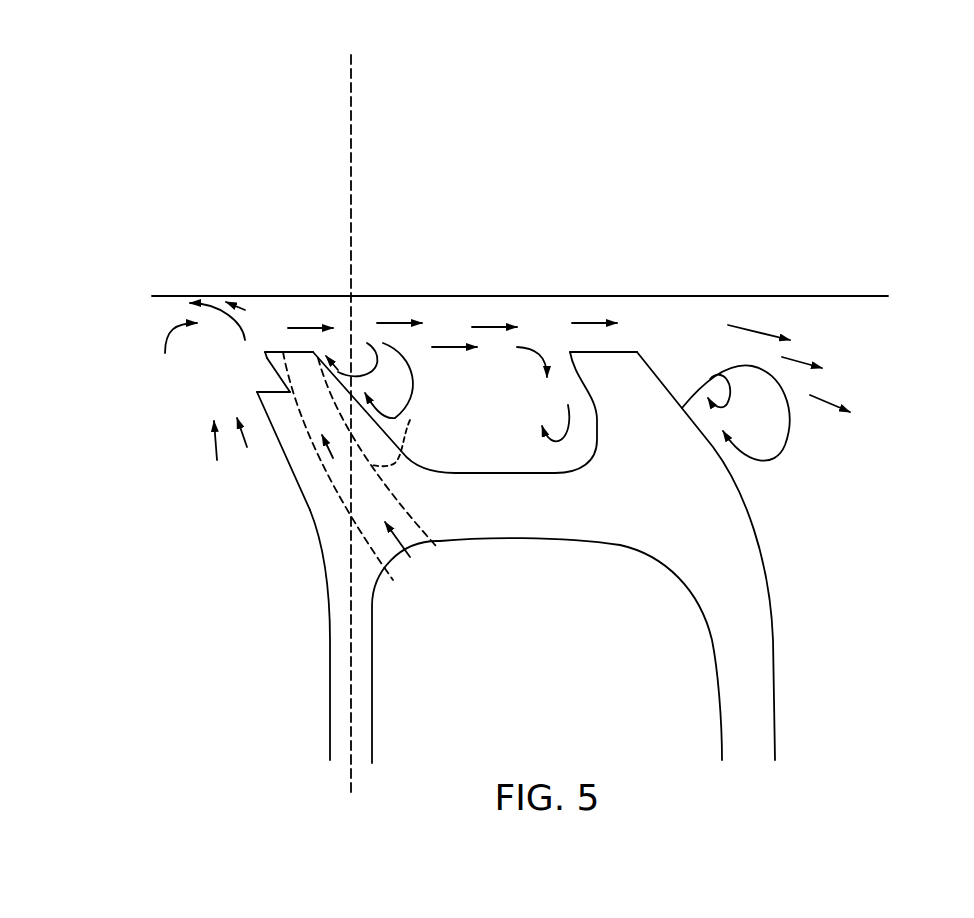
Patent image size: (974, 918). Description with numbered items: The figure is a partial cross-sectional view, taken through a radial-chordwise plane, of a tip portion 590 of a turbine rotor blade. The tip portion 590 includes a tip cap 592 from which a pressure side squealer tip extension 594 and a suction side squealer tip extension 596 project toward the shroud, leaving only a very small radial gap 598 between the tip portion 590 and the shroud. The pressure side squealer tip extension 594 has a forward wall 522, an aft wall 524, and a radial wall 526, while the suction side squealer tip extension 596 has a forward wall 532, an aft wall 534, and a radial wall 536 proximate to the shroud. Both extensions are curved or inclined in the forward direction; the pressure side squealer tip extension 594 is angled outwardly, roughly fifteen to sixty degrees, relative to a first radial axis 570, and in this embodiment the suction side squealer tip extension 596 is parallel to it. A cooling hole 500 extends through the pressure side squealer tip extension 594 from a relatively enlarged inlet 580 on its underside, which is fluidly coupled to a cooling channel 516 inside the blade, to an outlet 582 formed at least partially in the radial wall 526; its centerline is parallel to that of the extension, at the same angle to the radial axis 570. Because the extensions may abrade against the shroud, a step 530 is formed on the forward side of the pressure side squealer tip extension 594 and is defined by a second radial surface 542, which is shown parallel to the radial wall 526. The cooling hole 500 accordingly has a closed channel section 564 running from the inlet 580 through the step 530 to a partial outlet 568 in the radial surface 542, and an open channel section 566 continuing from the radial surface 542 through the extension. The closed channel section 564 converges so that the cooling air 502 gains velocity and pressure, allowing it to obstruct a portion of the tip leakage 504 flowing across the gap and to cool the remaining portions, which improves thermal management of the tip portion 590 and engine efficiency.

The cooling hole 500 is at (410, 420).
The cooling air 502 is at (328, 462).
The tip leakage 504 is at (395, 323).
The cooling channel 516 is at (529, 734).
The forward wall 522 is at (304, 492).
The aft wall 524 is at (405, 453).
The radial wall 526 is at (302, 350).
The step 530 is at (248, 396).
The forward wall 532 is at (575, 378).
The aft wall 534 is at (748, 367).
The radial wall 536 is at (597, 350).
The second radial surface 542 is at (258, 392).
The closed channel section 564 is at (397, 505).
The open channel section 566 is at (268, 356).
The partial outlet 568 is at (288, 387).
The first radial axis 570 is at (353, 86).
The inlet 580 is at (426, 547).
The outlet 582 is at (278, 348).
The tip portion 590 is at (847, 577).
The tip cap 592 is at (549, 532).
The pressure side squealer tip extension 594 is at (280, 453).
The suction side squealer tip extension 596 is at (662, 370).
The radial gap 598 is at (635, 305).